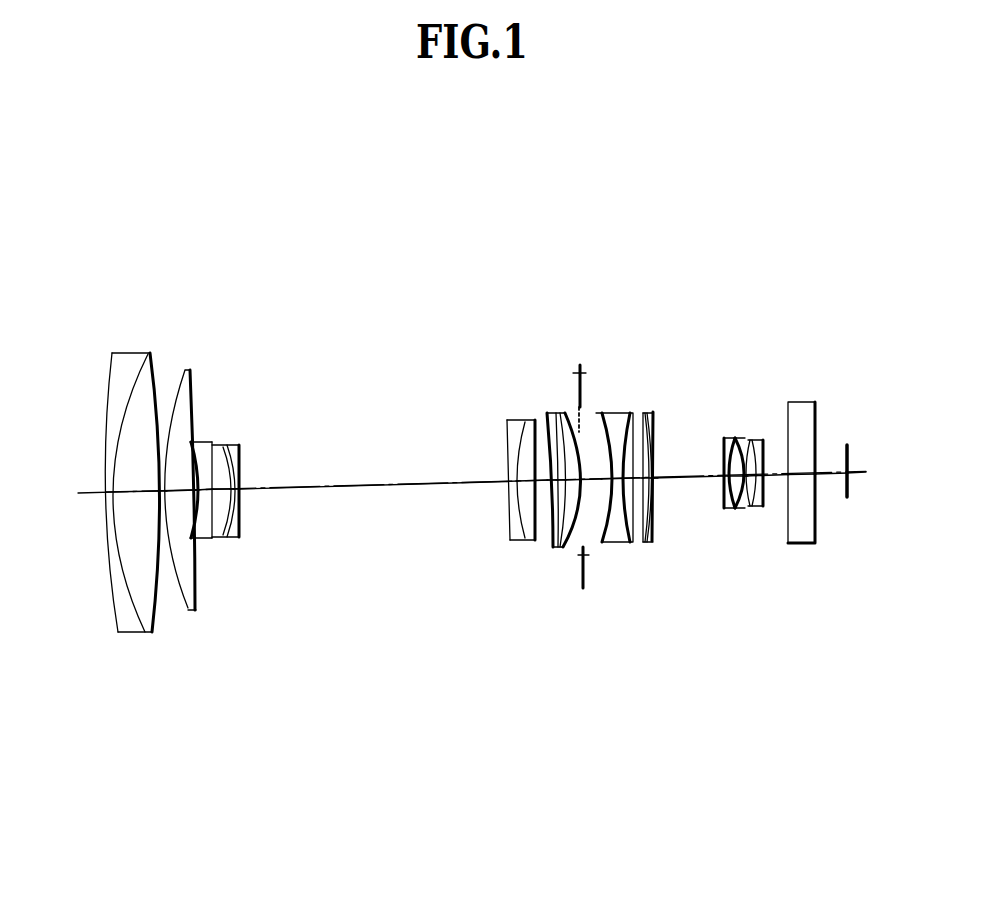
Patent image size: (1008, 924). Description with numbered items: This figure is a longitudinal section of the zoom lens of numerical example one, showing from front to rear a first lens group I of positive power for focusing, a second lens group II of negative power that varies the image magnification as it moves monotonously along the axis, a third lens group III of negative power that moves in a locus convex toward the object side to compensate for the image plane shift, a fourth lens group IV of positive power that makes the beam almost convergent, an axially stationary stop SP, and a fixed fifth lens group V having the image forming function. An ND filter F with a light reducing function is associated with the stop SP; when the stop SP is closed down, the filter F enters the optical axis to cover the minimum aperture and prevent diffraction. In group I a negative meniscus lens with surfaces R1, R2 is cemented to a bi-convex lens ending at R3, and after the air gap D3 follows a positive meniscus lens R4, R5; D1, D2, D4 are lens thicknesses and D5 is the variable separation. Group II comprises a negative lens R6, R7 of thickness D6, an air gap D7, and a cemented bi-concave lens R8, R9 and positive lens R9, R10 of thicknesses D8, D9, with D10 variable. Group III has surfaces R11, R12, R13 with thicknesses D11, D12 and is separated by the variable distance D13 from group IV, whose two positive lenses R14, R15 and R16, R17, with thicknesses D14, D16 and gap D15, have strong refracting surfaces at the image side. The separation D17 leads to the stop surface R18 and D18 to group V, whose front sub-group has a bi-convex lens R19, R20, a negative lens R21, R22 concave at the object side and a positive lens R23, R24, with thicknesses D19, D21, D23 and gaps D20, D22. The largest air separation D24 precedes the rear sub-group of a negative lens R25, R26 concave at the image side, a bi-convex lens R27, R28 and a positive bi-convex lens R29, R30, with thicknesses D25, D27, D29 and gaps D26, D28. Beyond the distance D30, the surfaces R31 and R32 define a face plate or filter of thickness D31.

The first lens group I is at (198, 221).
The second lens group II is at (210, 221).
The third lens group III is at (352, 221).
The fourth lens group IV is at (528, 221).
The fifth lens group V is at (778, 221).
The ND filter F is at (568, 413).
The stop SP is at (573, 443).
The first lens surface R1 is at (103, 363).
The second lens surface R2 is at (122, 353).
The third lens surface R3 is at (152, 353).
The fourth lens surface R4 is at (168, 370).
The fifth lens surface R5 is at (197, 372).
The sixth lens surface R6 is at (198, 440).
The seventh lens surface R7 is at (212, 443).
The eighth lens surface R8 is at (222, 445).
The ninth lens surface R9 is at (245, 445).
The tenth lens surface R10 is at (250, 445).
The eleventh lens surface R11 is at (505, 419).
The twelfth lens surface R12 is at (517, 421).
The thirteenth lens surface R13 is at (533, 420).
The fourteenth lens surface R14 is at (547, 413).
The fifteenth lens surface R15 is at (556, 413).
The sixteenth lens surface R16 is at (561, 413).
The seventeenth lens surface R17 is at (566, 413).
The stop surface R18 is at (578, 373).
The nineteenth lens surface R19 is at (593, 413).
The twentieth lens surface R20 is at (603, 413).
The twenty-first lens surface R21 is at (615, 413).
The twenty-second lens surface R22 is at (628, 413).
The twenty-third lens surface R23 is at (640, 415).
The twenty-fourth lens surface R24 is at (656, 425).
The twenty-fifth lens surface R25 is at (722, 437).
The twenty-sixth lens surface R26 is at (728, 437).
The twenty-seventh lens surface R27 is at (735, 437).
The twenty-eighth lens surface R28 is at (745, 439).
The twenty-ninth lens surface R29 is at (752, 439).
The thirtieth lens surface R30 is at (763, 439).
The thirty-first surface R31 is at (788, 405).
The thirty-second surface R32 is at (816, 402).
The first axial lens thickness D1 is at (122, 634).
The second axial lens thickness D2 is at (143, 633).
The third axial air separation D3 is at (158, 615).
The fourth axial lens thickness D4 is at (182, 612).
The fifth axial air separation D5 is at (206, 545).
The sixth axial lens thickness D6 is at (213, 540).
The seventh axial air separation D7 is at (222, 540).
The eighth axial lens thickness D8 is at (236, 540).
The ninth axial lens thickness D9 is at (245, 540).
The tenth axial air separation D10 is at (374, 488).
The eleventh axial lens thickness D11 is at (512, 542).
The twelfth axial lens thickness D12 is at (525, 545).
The thirteenth axial air separation D13 is at (540, 545).
The fourteenth axial lens thickness D14 is at (555, 547).
The fifteenth axial air separation D15 is at (566, 549).
The sixteenth axial lens thickness D16 is at (577, 549).
The seventeenth axial air separation D17 is at (570, 553).
The eighteenth axial air separation D18 is at (600, 545).
The nineteenth axial lens thickness D19 is at (645, 545).
The twentieth axial air separation D20 is at (650, 545).
The twenty-first axial lens thickness D21 is at (668, 548).
The twenty-second axial air separation D22 is at (678, 548).
The twenty-third axial lens thickness D23 is at (695, 548).
The twenty-fourth axial air separation D24 is at (694, 478).
The twenty-fifth axial lens thickness D25 is at (735, 509).
The twenty-sixth axial air separation D26 is at (743, 507).
The twenty-seventh axial lens thickness D27 is at (757, 503).
The twenty-eighth axial air separation D28 is at (773, 507).
The twenty-ninth axial lens thickness D29 is at (790, 512).
The thirtieth axial air separation D30 is at (815, 535).
The thirty-first axial thickness D31 is at (818, 510).